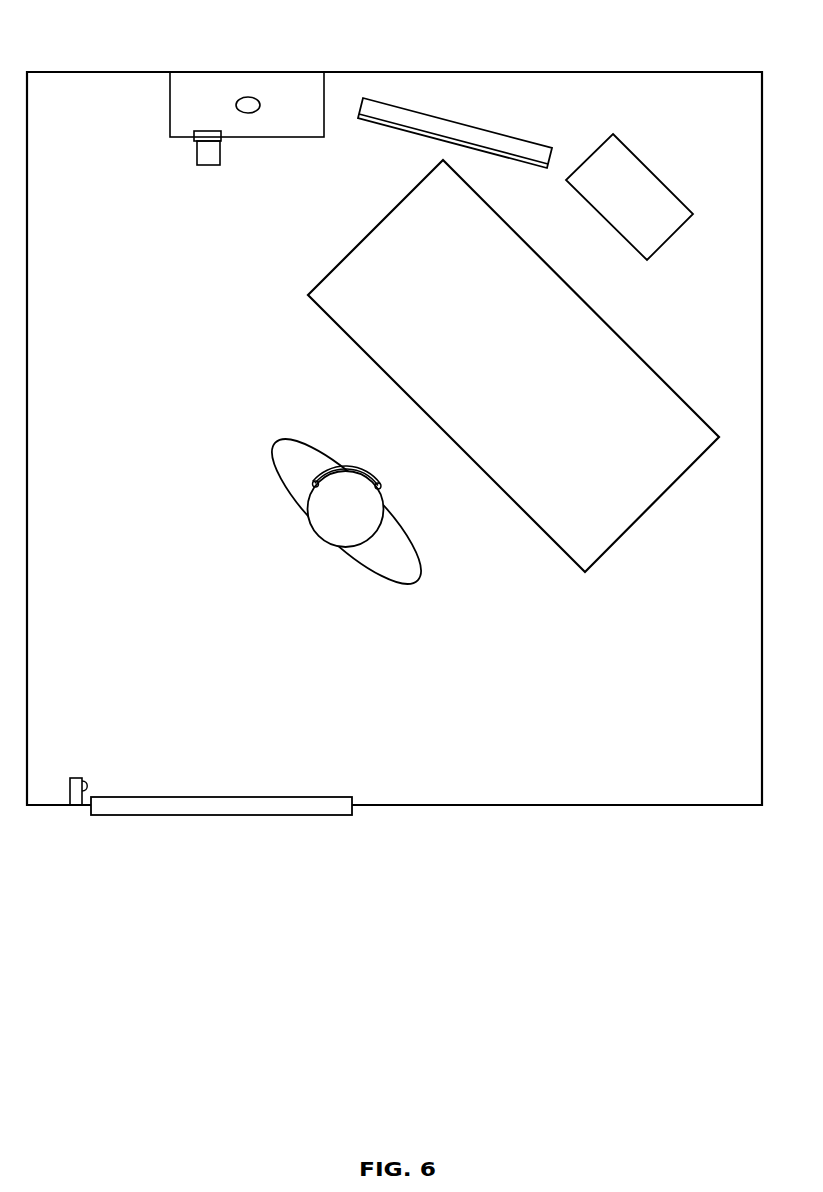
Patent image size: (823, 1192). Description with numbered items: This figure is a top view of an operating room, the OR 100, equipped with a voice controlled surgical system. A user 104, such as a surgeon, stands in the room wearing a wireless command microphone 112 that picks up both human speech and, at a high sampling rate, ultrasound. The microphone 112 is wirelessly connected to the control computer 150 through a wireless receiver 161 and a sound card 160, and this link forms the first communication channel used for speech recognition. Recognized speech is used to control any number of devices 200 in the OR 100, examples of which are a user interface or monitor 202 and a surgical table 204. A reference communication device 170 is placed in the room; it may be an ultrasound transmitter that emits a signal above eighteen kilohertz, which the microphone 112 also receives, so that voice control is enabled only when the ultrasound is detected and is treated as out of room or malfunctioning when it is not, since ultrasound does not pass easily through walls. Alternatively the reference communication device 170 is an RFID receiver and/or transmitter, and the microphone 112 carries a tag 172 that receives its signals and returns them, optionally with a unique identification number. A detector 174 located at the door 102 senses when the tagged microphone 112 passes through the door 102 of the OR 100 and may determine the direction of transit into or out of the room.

The operating room 100 is at (137, 72).
The door 102 is at (222, 797).
The user 104 is at (278, 442).
The wireless command microphone 112 is at (378, 483).
The control computer 150 is at (170, 101).
The sound card 160 is at (193, 141).
The wireless receiver 161 is at (212, 166).
The reference communication device 170 is at (248, 97).
The tag 172 is at (333, 474).
The detector 174 is at (77, 777).
The devices 200 is at (655, 173).
The user interfaces and/or monitors 202 is at (458, 122).
The surgical table 204 is at (637, 360).